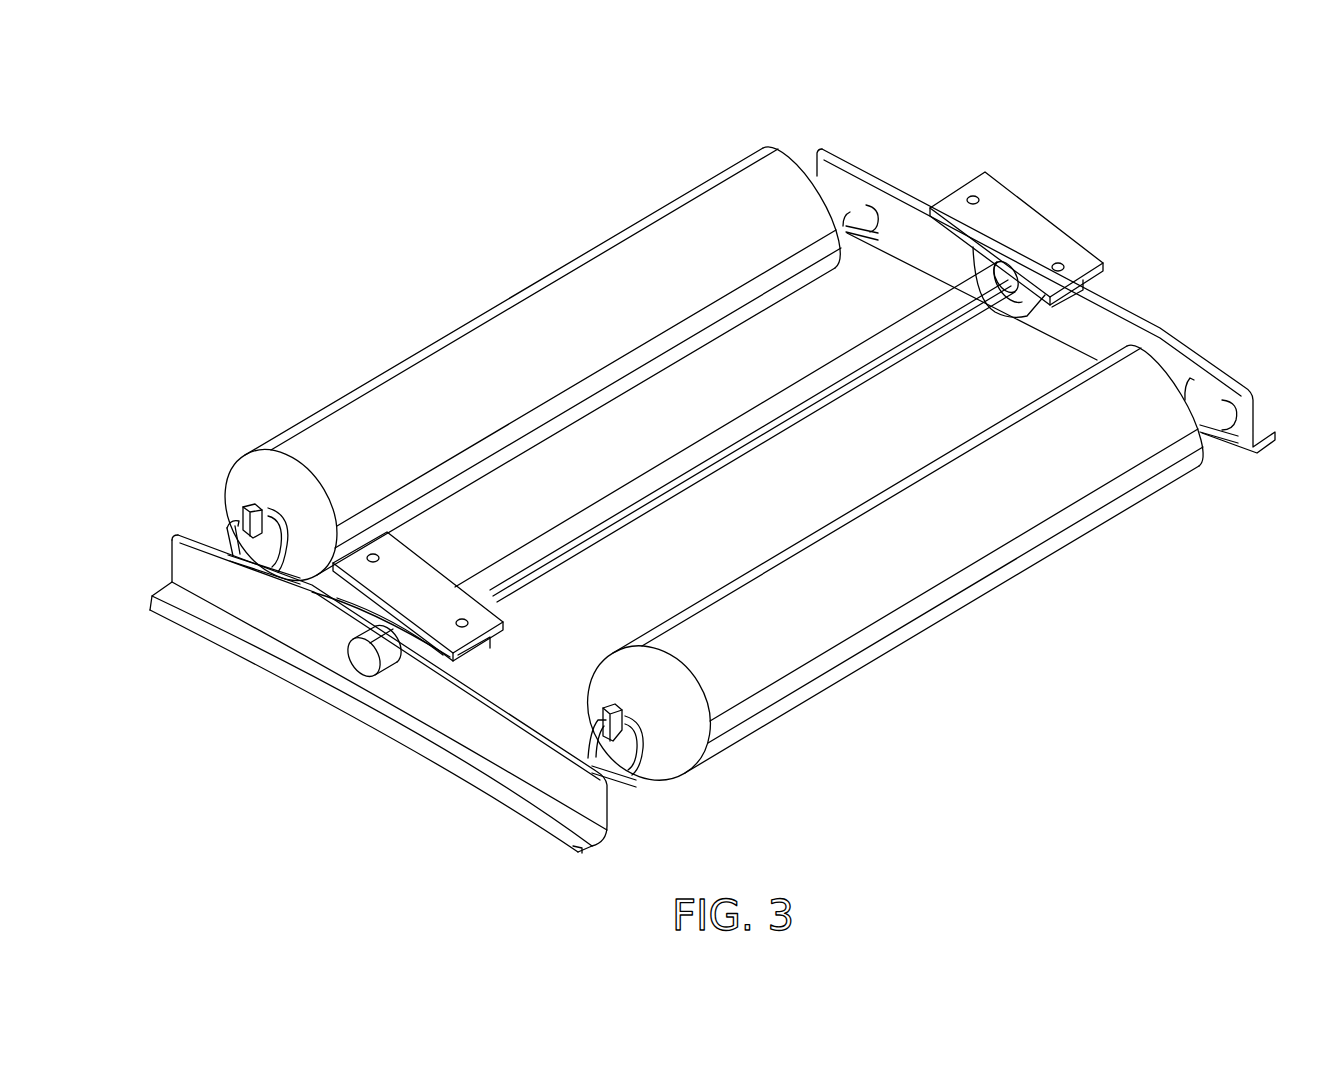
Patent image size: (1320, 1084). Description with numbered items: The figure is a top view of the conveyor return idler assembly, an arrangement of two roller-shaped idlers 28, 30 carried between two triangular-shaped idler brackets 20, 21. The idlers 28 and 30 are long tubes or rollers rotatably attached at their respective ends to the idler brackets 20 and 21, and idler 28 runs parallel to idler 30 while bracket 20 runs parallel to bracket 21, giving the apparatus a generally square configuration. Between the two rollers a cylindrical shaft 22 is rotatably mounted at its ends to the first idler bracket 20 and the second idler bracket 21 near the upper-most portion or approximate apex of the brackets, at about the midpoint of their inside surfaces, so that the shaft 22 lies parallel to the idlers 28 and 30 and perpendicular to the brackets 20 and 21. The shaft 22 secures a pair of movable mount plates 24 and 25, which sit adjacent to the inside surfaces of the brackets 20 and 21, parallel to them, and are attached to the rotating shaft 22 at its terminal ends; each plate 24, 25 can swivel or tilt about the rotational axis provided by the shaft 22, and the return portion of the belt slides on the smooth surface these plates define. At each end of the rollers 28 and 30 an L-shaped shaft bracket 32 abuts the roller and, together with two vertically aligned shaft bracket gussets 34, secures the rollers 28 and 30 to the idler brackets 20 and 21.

The idler bracket 20 is at (532, 758).
The idler bracket 21 is at (1130, 327).
The shaft 22 is at (735, 438).
The mount plate 24 is at (1018, 218).
The mount plate 25 is at (417, 573).
The idler 28 is at (920, 607).
The idler 30 is at (512, 330).
The shaft bracket 32 is at (242, 519).
The shaft bracket gusset 34 is at (310, 594).